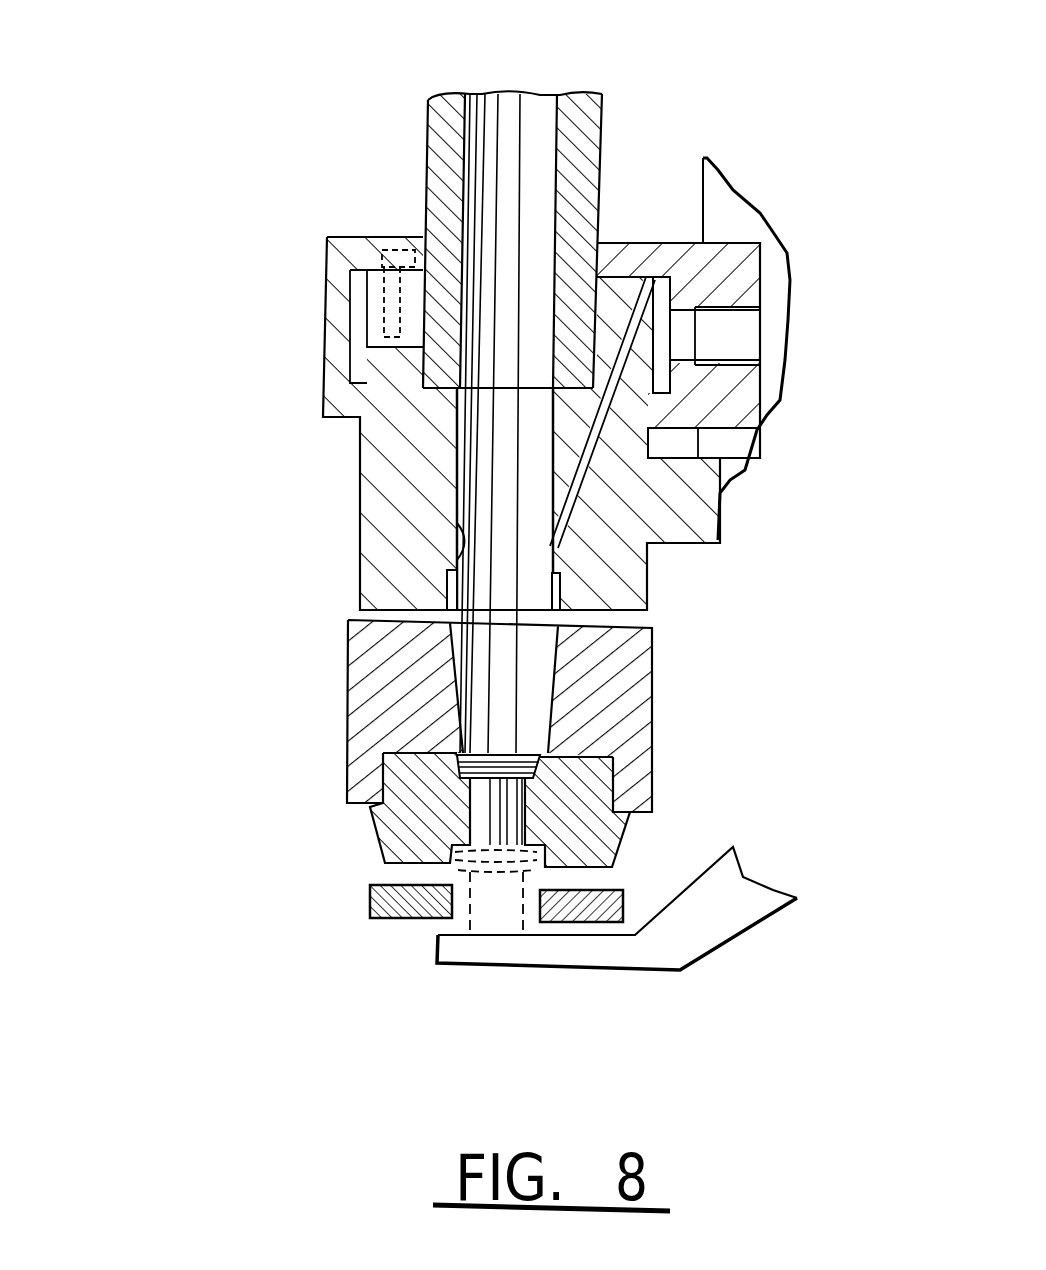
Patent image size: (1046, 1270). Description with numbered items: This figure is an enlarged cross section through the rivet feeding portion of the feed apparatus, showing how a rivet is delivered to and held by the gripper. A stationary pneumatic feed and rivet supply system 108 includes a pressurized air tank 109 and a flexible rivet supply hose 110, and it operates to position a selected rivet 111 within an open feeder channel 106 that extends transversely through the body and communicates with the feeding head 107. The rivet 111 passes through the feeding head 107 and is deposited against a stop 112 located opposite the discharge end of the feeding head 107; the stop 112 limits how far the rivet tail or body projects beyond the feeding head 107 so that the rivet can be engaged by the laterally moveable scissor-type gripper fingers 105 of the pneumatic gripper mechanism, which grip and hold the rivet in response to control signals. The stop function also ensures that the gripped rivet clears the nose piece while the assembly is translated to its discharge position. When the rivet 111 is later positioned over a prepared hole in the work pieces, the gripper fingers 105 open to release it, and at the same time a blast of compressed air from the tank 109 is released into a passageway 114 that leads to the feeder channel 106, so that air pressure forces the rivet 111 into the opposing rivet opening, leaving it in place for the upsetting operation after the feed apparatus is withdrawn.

The gripper fingers 105 is at (372, 912).
The feeder channel 106 is at (462, 522).
The feeding head 107 is at (370, 666).
The pneumatic feed and rivet supply system 108 is at (324, 238).
The pressurized air tank 109 is at (701, 179).
The rivet supply hose 110 is at (427, 157).
The rivet 111 is at (488, 825).
The stop 112 is at (637, 973).
The passageway 114 is at (553, 493).